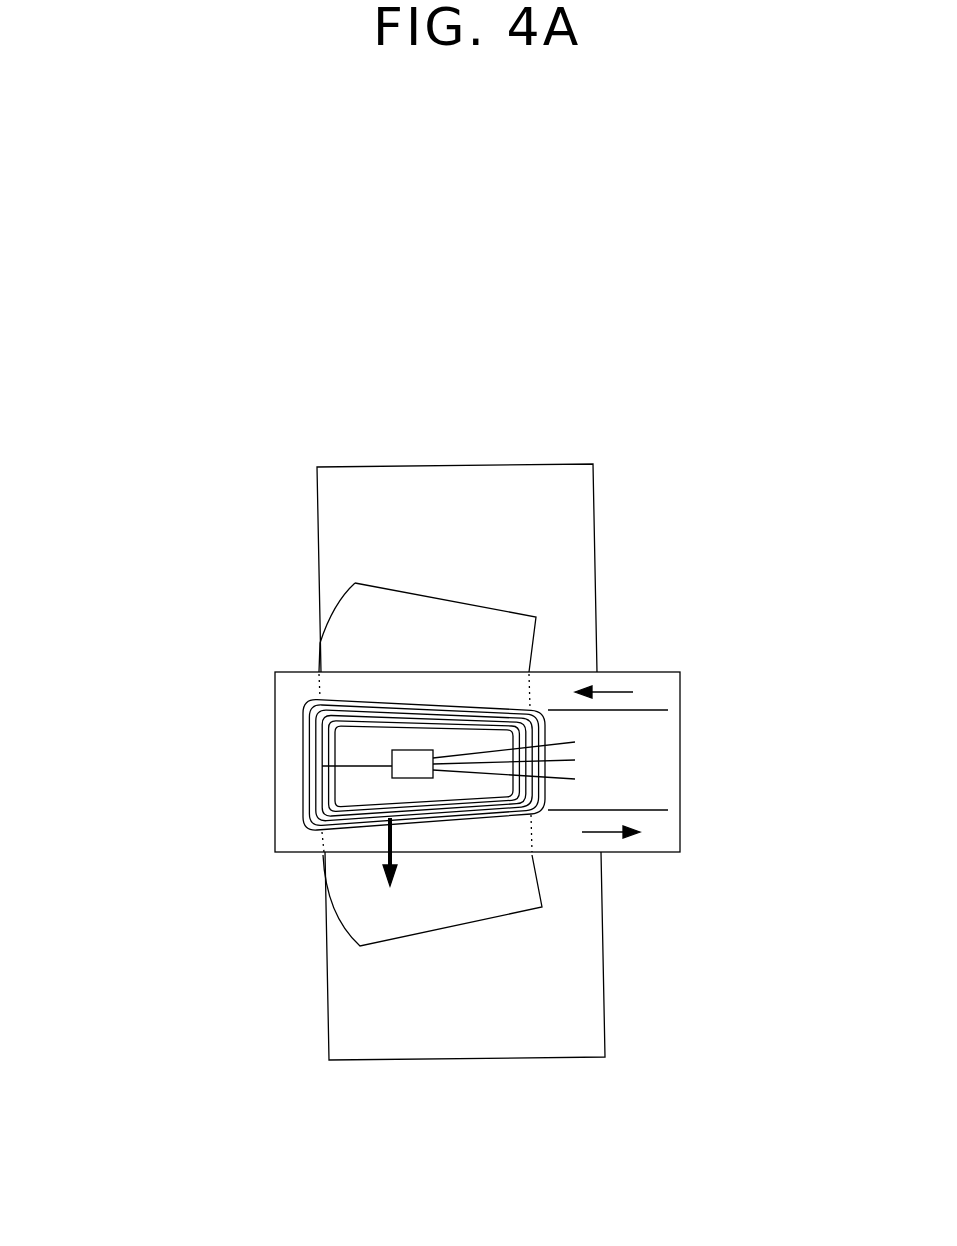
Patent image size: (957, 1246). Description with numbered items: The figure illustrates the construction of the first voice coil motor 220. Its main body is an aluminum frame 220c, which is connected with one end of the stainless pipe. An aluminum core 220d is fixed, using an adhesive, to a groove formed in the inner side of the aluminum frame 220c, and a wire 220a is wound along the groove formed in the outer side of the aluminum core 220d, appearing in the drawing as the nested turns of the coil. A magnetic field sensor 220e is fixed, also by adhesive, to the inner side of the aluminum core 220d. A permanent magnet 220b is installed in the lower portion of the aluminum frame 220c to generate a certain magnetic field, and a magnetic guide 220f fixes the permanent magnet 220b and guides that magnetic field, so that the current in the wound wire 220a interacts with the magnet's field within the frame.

The first voice coil motor 220 is at (184, 573).
The wire 220a is at (305, 757).
The permanent magnet 220b is at (338, 914).
The aluminum frame 220c is at (658, 768).
The aluminum core 220d is at (457, 742).
The magnetic field sensor 220e is at (413, 763).
The magnetic guide 220f is at (605, 975).